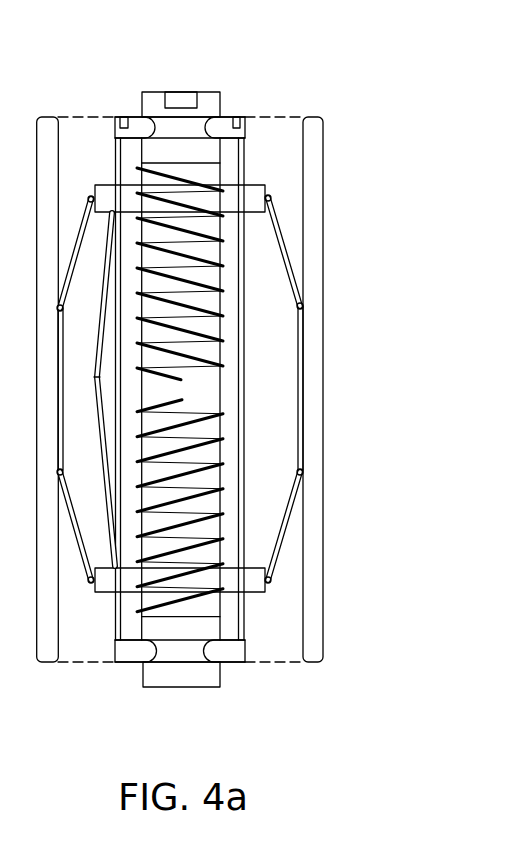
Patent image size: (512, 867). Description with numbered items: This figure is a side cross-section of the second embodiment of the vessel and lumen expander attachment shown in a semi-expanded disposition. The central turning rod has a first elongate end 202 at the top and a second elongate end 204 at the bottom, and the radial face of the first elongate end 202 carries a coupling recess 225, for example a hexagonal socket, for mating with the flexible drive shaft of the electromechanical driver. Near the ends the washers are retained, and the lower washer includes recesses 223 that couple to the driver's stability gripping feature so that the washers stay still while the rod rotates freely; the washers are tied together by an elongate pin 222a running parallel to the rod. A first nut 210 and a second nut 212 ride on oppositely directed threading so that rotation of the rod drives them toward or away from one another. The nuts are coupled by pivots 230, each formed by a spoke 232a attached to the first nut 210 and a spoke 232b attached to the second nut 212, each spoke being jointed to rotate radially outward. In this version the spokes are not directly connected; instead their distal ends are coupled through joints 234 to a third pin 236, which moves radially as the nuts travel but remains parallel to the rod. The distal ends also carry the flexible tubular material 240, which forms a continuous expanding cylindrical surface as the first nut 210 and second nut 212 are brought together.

The first elongate end 202 is at (155, 92).
The coupling recess 225 is at (182, 95).
The recesses 223 is at (237, 116).
The second nut 212 is at (257, 185).
The pivots 230 is at (268, 199).
The spoke 232b is at (283, 248).
The joint 234 is at (302, 307).
The elongate pin 222a is at (242, 374).
The third pin 236 is at (301, 417).
The first nut 210 is at (255, 568).
The spoke 232a is at (285, 523).
The flexible tubular material 240 is at (315, 583).
The second elongate end 204 is at (198, 678).